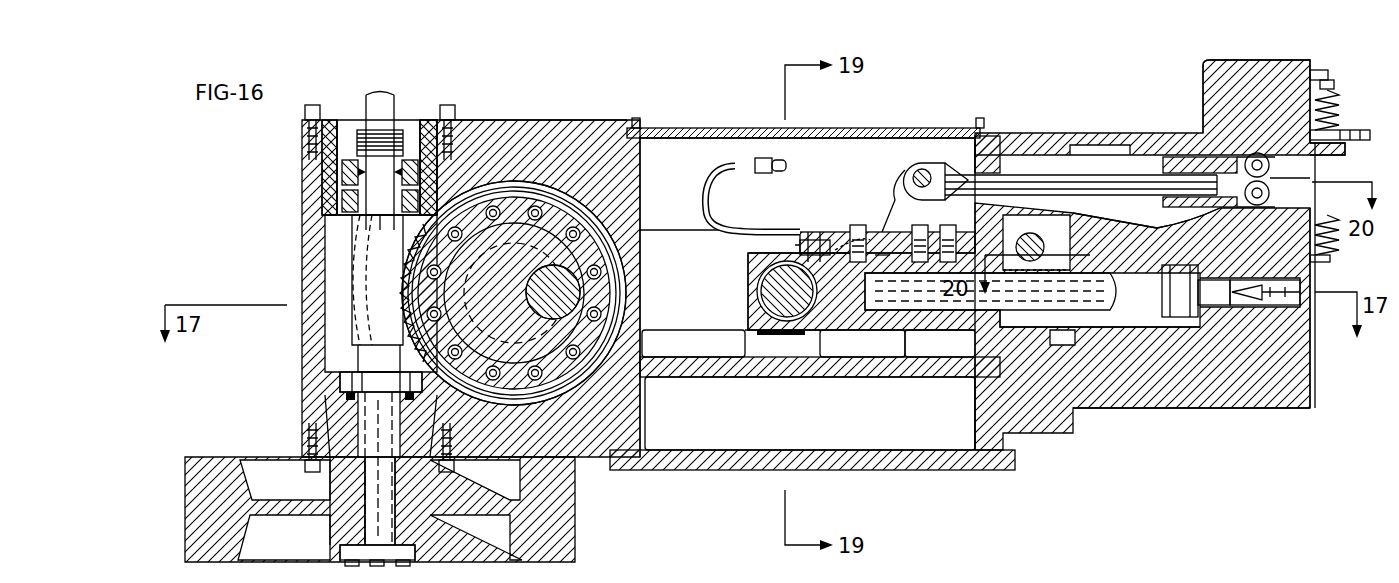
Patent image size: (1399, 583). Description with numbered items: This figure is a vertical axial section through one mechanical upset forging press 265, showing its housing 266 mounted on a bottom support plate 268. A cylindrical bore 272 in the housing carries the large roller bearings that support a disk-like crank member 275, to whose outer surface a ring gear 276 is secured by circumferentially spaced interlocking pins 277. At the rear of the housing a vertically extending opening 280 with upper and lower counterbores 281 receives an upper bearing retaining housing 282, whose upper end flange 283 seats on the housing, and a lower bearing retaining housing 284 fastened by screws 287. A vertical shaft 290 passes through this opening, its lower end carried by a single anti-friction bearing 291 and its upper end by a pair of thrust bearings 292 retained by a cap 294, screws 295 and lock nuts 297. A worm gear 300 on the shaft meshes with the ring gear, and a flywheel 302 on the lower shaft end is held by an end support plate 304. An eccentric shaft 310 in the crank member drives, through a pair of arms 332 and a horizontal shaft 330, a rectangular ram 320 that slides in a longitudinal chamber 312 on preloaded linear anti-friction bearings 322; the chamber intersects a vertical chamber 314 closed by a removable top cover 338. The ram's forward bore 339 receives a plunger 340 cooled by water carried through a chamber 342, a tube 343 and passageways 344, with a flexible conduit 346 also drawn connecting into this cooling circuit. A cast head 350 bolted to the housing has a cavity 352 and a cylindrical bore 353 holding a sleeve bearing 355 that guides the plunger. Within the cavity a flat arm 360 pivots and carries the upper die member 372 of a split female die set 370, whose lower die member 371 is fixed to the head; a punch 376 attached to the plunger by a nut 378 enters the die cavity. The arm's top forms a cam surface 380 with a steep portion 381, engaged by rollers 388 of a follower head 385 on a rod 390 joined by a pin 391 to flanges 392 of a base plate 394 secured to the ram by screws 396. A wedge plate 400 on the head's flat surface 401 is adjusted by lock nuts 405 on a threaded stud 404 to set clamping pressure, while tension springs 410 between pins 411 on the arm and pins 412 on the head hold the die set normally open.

The mechanical upset forging press 265 is at (978, 125).
The housing 266 is at (546, 128).
The bottom support plate 268 is at (910, 452).
The cylindrical bore 272 is at (630, 408).
The crank member 275 is at (495, 200).
The ring gear 276 is at (605, 318).
The interlocking pins 277 is at (600, 350).
The vertically extending opening 280 is at (312, 330).
The counterbores 281 is at (320, 410).
The bearing retaining housing 282 is at (345, 175).
The upper end flange 283 is at (306, 137).
The bearing retaining housing 284 is at (322, 440).
The screws 287 is at (446, 470).
The shaft 290 is at (372, 470).
The anti-friction bearing 291 is at (340, 382).
The anti-friction thrust bearings 292 is at (345, 200).
The cap 294 is at (440, 128).
The screws 295 is at (448, 130).
The lock nuts 297 is at (362, 132).
The worm gear 300 is at (352, 290).
The flywheel 302 is at (200, 462).
The end support plate 304 is at (340, 553).
The shaft 310 is at (582, 288).
The longitudinally extending chamber 312 is at (680, 230).
The vertically extending chamber 314 is at (672, 138).
The ram 320 is at (905, 352).
The preloaded linear anti-friction bearings 322 is at (785, 337).
The shaft 330 is at (760, 300).
The arms 332 is at (716, 334).
The top cover 338 is at (722, 128).
The horizontally extending bore 339 is at (940, 344).
The plunger 340 is at (1135, 312).
The chamber 342 is at (918, 236).
The tube 343 is at (862, 344).
The passageways 344 is at (805, 240).
The hose 346 is at (712, 198).
The cast head 350 is at (1255, 414).
The cavity 352 is at (1085, 147).
The cylindrical bore 353 is at (975, 380).
The preloaded linear anti-friction sleeve bearing 355 is at (1048, 327).
The arm 360 is at (1120, 208).
The split female die set 370 is at (1316, 325).
The lower die member 371 is at (1305, 378).
The upper die member 372 is at (1300, 270).
The punch 376 is at (1300, 412).
The nut 378 is at (1182, 300).
The cam surface 380 is at (1145, 195).
The steep portion 381 is at (1215, 212).
The follower head 385 is at (1192, 160).
The rollers 388 is at (1272, 193).
The rod 390 is at (1017, 175).
The pin 391 is at (922, 168).
The flanges 392 is at (890, 178).
The base plate 394 is at (850, 235).
The screws 396 is at (952, 250).
The wedge plate 400 is at (1322, 155).
The flat surface 401 is at (1240, 128).
The threaded stud 404 is at (1330, 133).
The lock nuts 405 is at (1330, 104).
The tension springs 410 is at (1330, 84).
The pins 411 is at (1322, 246).
The pins 412 is at (1320, 72).